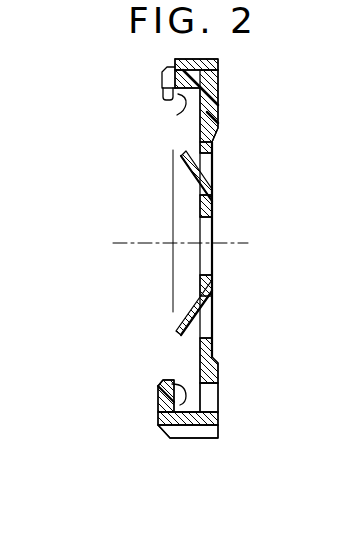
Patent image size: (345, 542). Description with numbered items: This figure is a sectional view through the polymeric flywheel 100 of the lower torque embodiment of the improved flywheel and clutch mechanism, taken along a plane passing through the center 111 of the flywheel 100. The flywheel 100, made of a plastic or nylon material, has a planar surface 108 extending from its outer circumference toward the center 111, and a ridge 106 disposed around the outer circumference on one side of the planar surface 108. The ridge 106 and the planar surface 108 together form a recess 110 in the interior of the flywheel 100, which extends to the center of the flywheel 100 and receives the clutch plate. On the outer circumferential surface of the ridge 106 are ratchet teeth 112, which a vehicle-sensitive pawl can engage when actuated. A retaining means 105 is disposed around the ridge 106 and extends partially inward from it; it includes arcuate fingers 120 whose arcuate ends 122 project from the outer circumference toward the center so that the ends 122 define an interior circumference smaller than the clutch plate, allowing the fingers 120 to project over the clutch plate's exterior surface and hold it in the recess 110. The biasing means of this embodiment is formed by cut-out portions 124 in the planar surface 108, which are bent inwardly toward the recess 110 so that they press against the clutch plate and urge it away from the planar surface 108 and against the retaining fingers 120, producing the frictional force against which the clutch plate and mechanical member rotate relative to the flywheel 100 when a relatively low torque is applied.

The polymeric flywheel 100 is at (93, 346).
The retaining means 105 is at (163, 94).
The ridge 106 is at (169, 71).
The planar surface 108 is at (200, 136).
The recess 110 is at (218, 107).
The center 111 is at (212, 245).
The ratchet teeth 112 is at (209, 68).
The arcuate fingers 120 is at (178, 109).
The arcuate ends 122 is at (168, 103).
The cut-out portions 124 is at (187, 173).